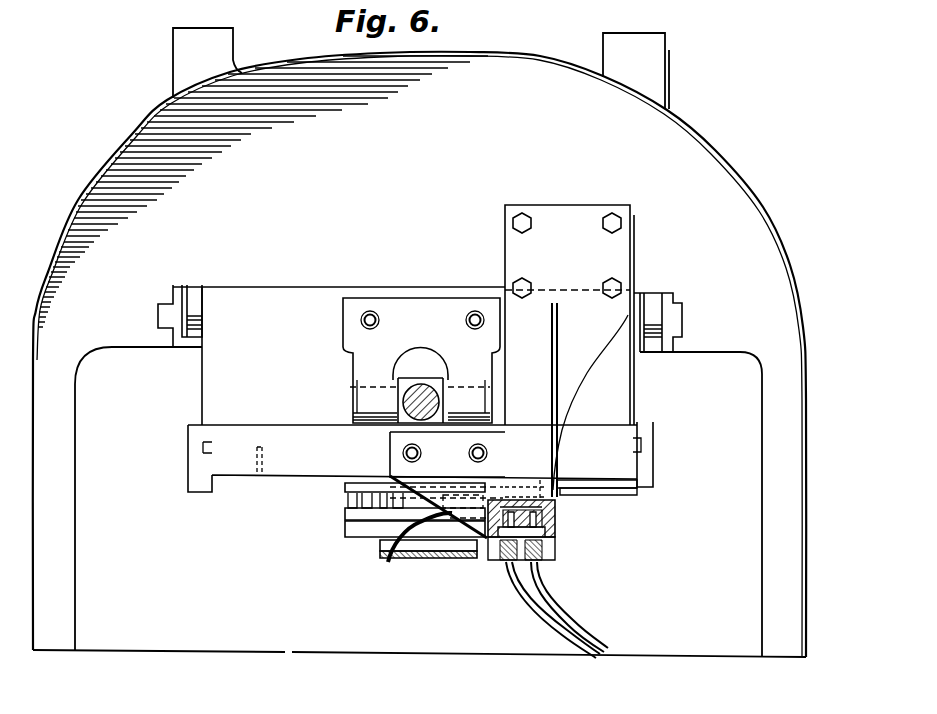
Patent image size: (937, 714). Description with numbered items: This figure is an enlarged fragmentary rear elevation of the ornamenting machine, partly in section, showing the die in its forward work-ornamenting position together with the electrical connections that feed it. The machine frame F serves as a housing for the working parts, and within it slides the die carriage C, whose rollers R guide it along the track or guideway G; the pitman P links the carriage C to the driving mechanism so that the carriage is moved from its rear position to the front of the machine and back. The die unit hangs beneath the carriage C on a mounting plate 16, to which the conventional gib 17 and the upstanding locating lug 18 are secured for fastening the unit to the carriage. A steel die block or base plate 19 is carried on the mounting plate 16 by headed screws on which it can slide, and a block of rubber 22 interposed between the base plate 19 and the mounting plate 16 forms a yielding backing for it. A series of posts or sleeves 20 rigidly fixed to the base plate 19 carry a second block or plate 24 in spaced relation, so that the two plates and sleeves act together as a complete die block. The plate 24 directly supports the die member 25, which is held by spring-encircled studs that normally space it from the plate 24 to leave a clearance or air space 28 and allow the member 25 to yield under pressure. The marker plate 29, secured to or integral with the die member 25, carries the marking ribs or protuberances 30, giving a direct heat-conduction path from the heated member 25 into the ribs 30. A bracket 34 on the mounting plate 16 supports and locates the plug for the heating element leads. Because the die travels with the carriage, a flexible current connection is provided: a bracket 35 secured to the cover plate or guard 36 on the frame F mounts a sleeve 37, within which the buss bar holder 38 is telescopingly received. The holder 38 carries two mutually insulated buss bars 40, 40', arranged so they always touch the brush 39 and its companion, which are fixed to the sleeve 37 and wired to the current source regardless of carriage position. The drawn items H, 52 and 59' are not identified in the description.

The cover plate or guard 36 is at (712, 168).
The frame F is at (58, 427).
The track or guideway G is at (167, 302).
The rollers R is at (193, 293).
The holder block H is at (641, 296).
The die carriage C is at (290, 297).
The mounting plate 16 is at (329, 469).
The locating lug 18 is at (263, 465).
The block of rubber 22 is at (364, 492).
The pitman P is at (422, 385).
The gib 17 is at (428, 472).
The posts or sleeves 20 is at (345, 493).
The second block or plate 24 is at (348, 510).
The clearance or air space 28 is at (345, 518).
The die member 25 is at (365, 530).
The die block or base plate 19 is at (380, 493).
The cable 52 is at (389, 565).
The marking ribs or protuberances 30 is at (426, 545).
The marker plate 29 is at (455, 548).
The sensor frame 59' is at (504, 540).
The sleeve 37 is at (557, 522).
The buss bar holder 38 is at (555, 505).
The brush 39 is at (552, 537).
The bracket 35 is at (573, 357).
The buss bar 40' is at (525, 472).
The buss bar 40 is at (596, 468).
The bracket 34 is at (566, 489).